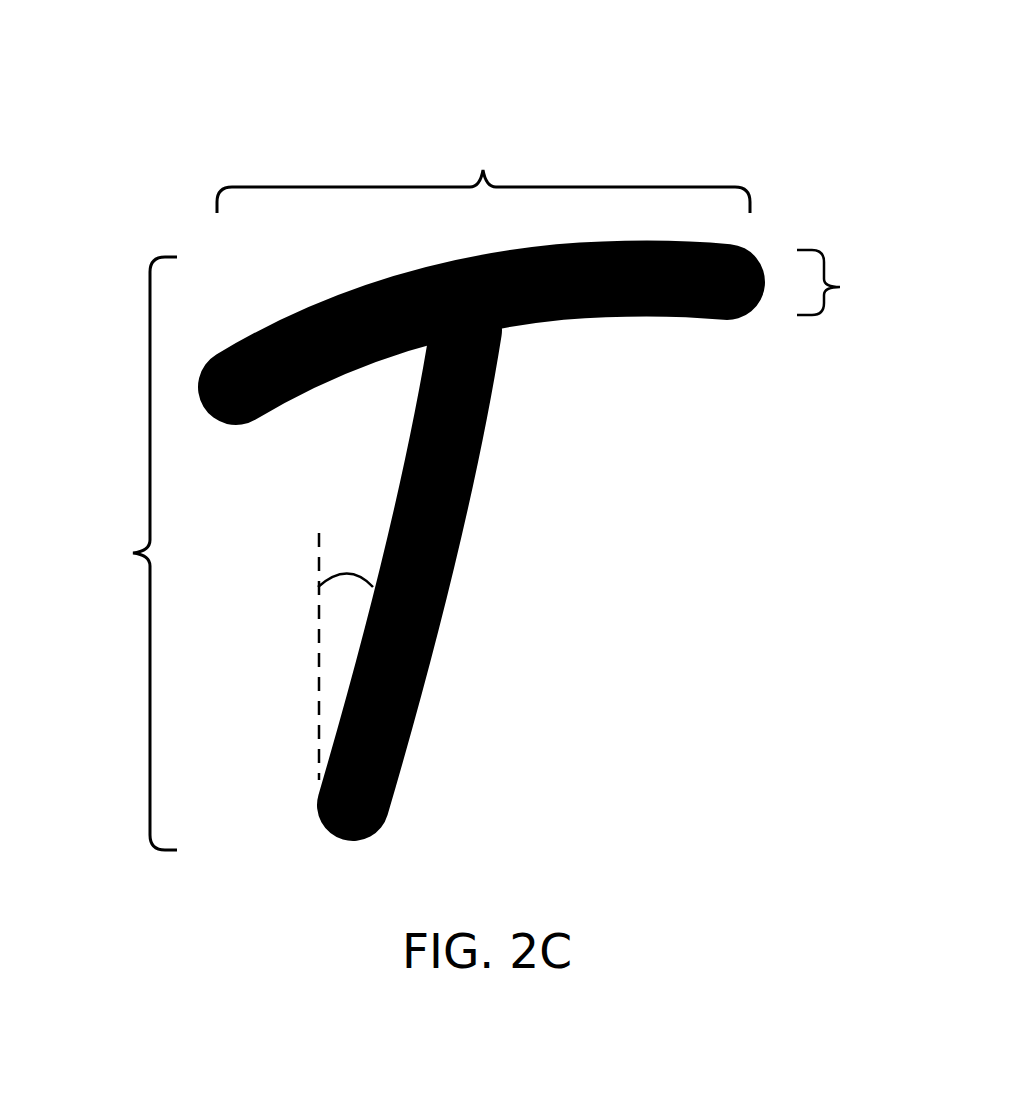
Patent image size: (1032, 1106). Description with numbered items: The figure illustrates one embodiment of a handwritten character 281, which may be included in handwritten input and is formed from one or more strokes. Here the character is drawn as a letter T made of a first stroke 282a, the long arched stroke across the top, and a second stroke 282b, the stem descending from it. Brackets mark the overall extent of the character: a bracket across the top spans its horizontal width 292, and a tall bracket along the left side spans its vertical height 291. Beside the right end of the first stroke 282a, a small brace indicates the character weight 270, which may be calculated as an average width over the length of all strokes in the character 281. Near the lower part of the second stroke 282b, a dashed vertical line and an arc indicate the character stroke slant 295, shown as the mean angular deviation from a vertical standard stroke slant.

The handwritten character 281 is at (100, 103).
The first stroke 282a is at (301, 308).
The second stroke 282b is at (437, 617).
The horizontal width 292 is at (483, 168).
The vertical height 291 is at (129, 553).
The character weight 270 is at (851, 282).
The character stroke slant 295 is at (348, 575).